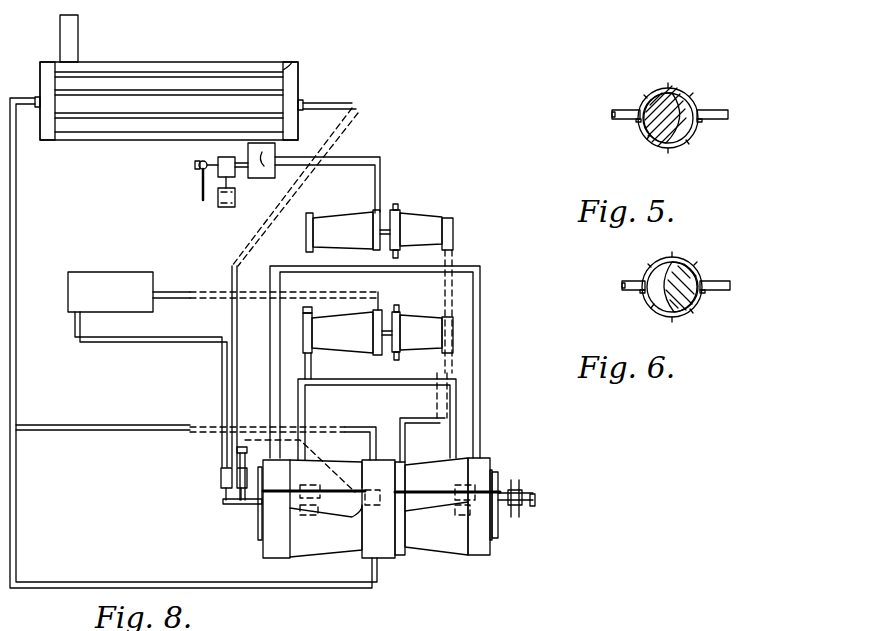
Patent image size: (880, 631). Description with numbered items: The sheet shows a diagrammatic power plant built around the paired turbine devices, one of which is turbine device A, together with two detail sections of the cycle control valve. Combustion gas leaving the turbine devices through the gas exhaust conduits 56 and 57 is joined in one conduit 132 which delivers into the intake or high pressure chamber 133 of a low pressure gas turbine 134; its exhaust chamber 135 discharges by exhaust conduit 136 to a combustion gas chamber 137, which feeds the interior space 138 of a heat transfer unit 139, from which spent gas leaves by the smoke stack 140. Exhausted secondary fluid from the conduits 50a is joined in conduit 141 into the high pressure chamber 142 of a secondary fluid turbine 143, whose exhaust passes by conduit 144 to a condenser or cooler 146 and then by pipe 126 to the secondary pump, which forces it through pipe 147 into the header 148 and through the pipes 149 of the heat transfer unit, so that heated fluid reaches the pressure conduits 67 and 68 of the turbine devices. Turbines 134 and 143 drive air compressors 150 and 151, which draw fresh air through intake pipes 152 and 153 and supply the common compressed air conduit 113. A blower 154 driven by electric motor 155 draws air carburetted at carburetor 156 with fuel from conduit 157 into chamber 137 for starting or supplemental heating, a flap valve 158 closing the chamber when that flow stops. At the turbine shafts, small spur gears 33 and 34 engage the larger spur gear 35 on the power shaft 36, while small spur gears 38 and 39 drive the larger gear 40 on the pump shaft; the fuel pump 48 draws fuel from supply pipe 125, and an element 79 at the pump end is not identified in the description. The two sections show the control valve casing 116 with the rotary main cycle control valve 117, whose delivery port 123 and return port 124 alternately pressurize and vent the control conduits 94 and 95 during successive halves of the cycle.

In FIG. 8, the smoke stack 140 is at (80, 46).
In FIG. 8, the header 148 is at (300, 70).
In FIG. 8, the interior space 138 is at (278, 90).
In FIG. 8, the pipe 147 is at (356, 103).
In FIG. 8, the combustion gas chamber 137 is at (283, 152).
In FIG. 8, the exhaust conduit 136 is at (365, 158).
In FIG. 8, the exhaust chamber 135 is at (385, 203).
In FIG. 8, the intake or high pressure chamber 133 is at (312, 212).
In FIG. 8, the low pressure gas turbine 134 is at (343, 231).
In FIG. 8, the air compressor 150 is at (421, 230).
In FIG. 8, the intake pipe 152 is at (400, 206).
In FIG. 8, the compressed air conduit 113 is at (455, 250).
In FIG. 8, the conduit 132 is at (284, 258).
In FIG. 8, the conduit 144 is at (340, 292).
In FIG. 8, the high pressure chamber 142 is at (312, 310).
In FIG. 8, the steam or secondary fluid turbine 143 is at (342, 332).
In FIG. 8, the intake pipe 153 is at (400, 307).
In FIG. 8, the air compressor 151 is at (417, 332).
In FIG. 8, the conduit 141 is at (311, 366).
In FIG. 8, the gas exhaust conduit 56 is at (275, 355).
In FIG. 8, the condenser or cooler heat transfer means 146 is at (70, 272).
In FIG. 8, the pipe 126 is at (188, 343).
In FIG. 8, the secondary fluid pressure conduit 67 is at (82, 426).
In FIG. 8, the fuel supply pipe 125 is at (240, 447).
In FIG. 8, the exhaust secondary fluid conduit 50a is at (300, 418).
In FIG. 8, the gas exhaust conduit 57 is at (482, 442).
In FIG. 8, the valve 79 is at (220, 482).
In FIG. 8, the small spur gear 38 is at (262, 470).
In FIG. 8, the fuel pump 48 is at (232, 505).
In FIG. 8, the larger spur gear 40 is at (258, 520).
In FIG. 8, the small spur gear 39 is at (260, 540).
In FIG. 8, the small spur gear 33 is at (500, 474).
In FIG. 8, the power shaft 36 is at (536, 500).
In FIG. 8, the larger spur gear 35 is at (512, 520).
In FIG. 8, the small spur gear 34 is at (496, 540).
In FIG. 8, the secondary fluid pressure conduit 68 is at (70, 584).
In FIG. 8, the heat transfer unit 139 is at (108, 142).
In FIG. 8, the pipes 149 is at (76, 140).
In FIG. 8, the carburetor 156 is at (197, 156).
In FIG. 8, the fuel conduit 157 is at (200, 185).
In FIG. 8, the blower 154 is at (241, 196).
In FIG. 8, the electric motor 155 is at (218, 206).
In FIG. 8, the flap valve 158 is at (266, 172).
In FIG. 8, the turbine device A is at (334, 509).
In FIG. 5, the control conduit 94 is at (624, 110).
In FIG. 6, the control conduit 94 is at (628, 292).
In FIG. 5, the control conduit 95 is at (718, 110).
In FIG. 6, the control conduit 95 is at (720, 281).
In FIG. 5, the main cycle control valve 117 is at (664, 93).
In FIG. 6, the main cycle control valve 117 is at (690, 272).
In FIG. 5, the control valve casing 116 is at (650, 142).
In FIG. 6, the control valve casing 116 is at (696, 310).
In FIG. 5, the delivery port 123 is at (690, 140).
In FIG. 6, the return port 124 is at (652, 272).